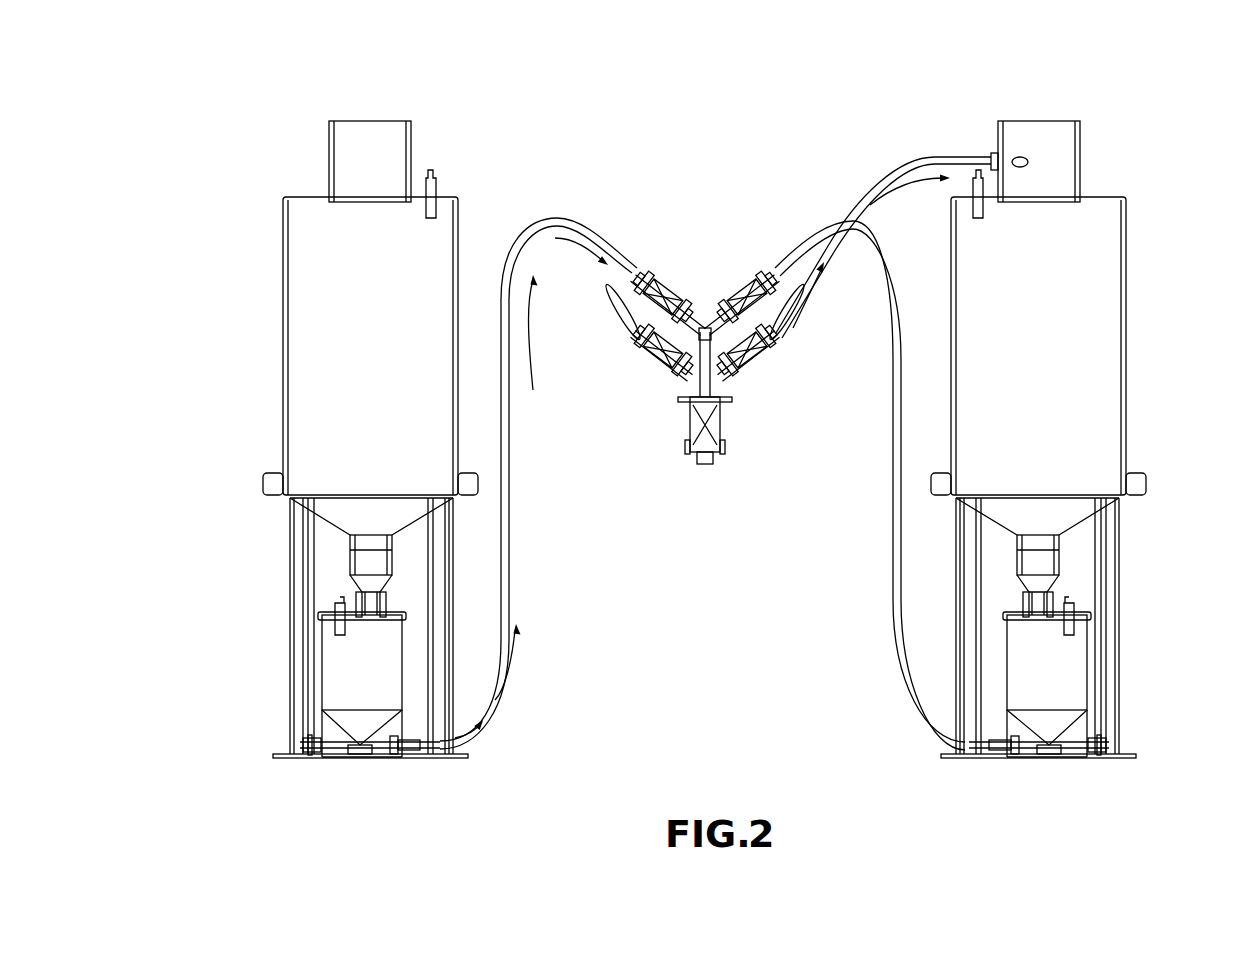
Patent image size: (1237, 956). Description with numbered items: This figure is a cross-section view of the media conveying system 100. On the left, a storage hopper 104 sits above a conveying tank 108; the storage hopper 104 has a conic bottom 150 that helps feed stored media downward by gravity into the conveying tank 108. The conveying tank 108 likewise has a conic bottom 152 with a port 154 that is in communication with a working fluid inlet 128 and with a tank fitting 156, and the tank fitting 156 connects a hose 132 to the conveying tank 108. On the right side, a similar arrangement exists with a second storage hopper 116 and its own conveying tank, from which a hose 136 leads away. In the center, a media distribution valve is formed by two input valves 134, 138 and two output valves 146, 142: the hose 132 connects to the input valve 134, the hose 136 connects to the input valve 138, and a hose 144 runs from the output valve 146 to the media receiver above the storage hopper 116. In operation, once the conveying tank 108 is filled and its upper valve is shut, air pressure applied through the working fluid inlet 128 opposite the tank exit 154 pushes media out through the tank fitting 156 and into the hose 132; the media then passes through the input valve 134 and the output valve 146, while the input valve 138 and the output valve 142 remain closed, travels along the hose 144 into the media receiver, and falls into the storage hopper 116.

The system 100 is at (405, 93).
The storage hopper 104 is at (391, 354).
The conveying tank 108 is at (381, 682).
The storage hopper 116 is at (1067, 354).
The working fluid inlet 128 is at (304, 762).
The hose 132 is at (510, 608).
The input valve 134 is at (662, 276).
The hose 136 is at (893, 545).
The input valve 138 is at (731, 276).
The output valve 142 is at (645, 384).
The hose 144 is at (930, 157).
The output valve 146 is at (765, 384).
The conic bottom 150 is at (340, 507).
The conic bottom 152 is at (350, 722).
The port 154 is at (358, 760).
The tank fitting 156 is at (414, 760).